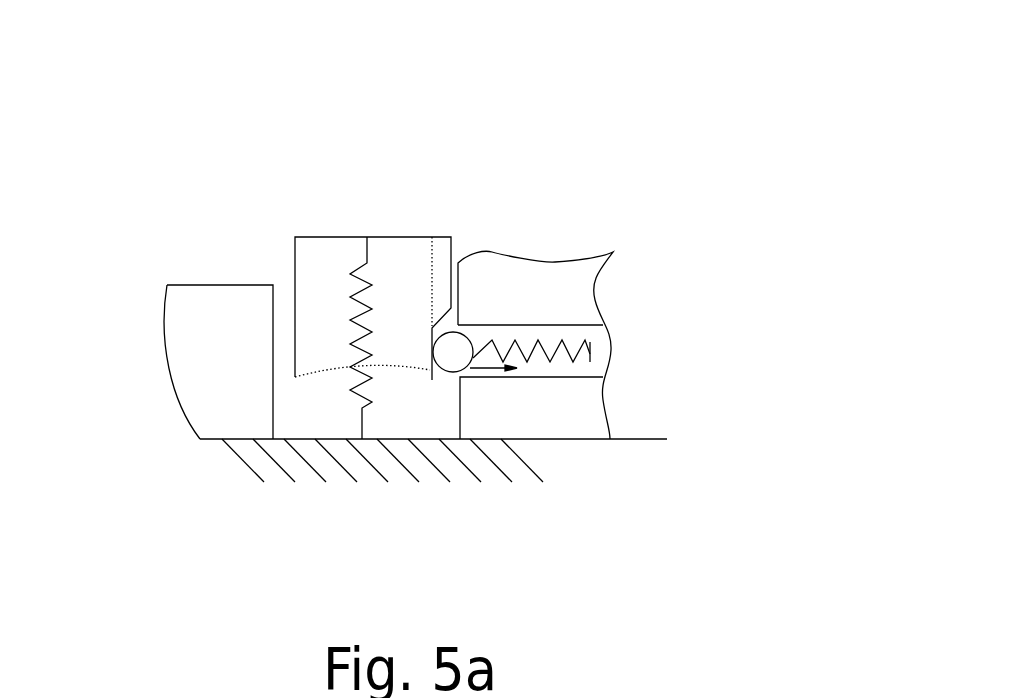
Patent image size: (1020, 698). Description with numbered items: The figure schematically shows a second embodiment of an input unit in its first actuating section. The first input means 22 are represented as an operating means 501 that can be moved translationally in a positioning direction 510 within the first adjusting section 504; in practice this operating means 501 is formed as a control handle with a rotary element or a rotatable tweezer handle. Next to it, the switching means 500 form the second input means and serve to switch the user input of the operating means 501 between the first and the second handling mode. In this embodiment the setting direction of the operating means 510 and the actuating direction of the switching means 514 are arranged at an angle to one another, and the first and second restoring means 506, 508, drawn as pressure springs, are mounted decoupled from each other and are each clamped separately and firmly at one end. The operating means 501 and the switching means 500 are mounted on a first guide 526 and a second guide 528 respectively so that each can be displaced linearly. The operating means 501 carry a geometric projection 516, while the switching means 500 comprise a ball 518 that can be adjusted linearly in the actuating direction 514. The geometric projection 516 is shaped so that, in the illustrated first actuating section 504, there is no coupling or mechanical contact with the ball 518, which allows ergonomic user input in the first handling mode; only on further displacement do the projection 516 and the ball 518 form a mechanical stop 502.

The first input means 22 is at (630, 86).
The switching means 500 is at (645, 345).
The operating means 501 is at (415, 250).
The mechanical stop 502 is at (426, 367).
The first adjusting section 504 is at (222, 192).
The first restoring means 506 is at (353, 312).
The second restoring means 508 is at (545, 358).
The positioning direction 510 is at (365, 200).
The actuating direction of the switching means 514 is at (492, 368).
The geometric projection 516 is at (442, 263).
The ball 518 is at (453, 342).
The first guide 526 is at (203, 373).
The second guide 528 is at (553, 432).